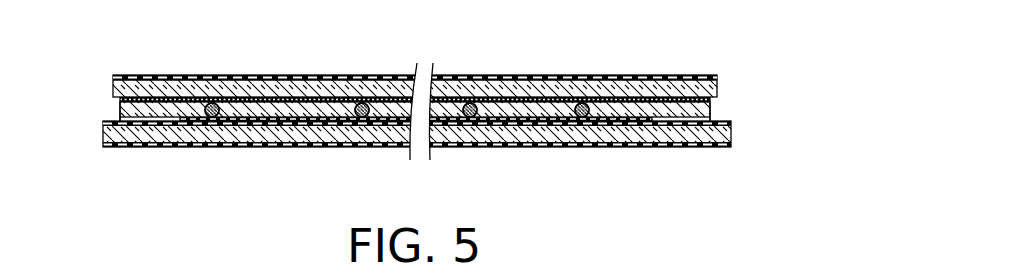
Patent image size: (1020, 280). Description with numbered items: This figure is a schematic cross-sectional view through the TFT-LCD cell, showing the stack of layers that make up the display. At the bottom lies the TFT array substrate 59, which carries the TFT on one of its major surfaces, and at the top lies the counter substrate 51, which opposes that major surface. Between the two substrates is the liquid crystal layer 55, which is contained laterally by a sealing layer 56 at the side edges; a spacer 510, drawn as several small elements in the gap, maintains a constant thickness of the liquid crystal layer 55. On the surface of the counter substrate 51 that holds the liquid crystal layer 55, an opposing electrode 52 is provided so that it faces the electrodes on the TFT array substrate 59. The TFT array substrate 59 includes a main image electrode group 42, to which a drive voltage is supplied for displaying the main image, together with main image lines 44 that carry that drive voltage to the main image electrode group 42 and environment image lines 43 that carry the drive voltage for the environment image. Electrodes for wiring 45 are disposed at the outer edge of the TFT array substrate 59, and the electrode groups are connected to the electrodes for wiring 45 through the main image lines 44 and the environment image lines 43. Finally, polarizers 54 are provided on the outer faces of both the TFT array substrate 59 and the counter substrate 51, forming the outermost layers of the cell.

The main image electrode group 42 is at (305, 135).
The environment image lines 43 is at (147, 123).
The main image lines 44 is at (213, 122).
The electrodes for wiring 45 is at (715, 122).
The counter substrate 51 is at (135, 92).
The opposing electrode 52 is at (225, 97).
The polarizers 54 is at (497, 142).
The liquid crystal layer 55 is at (612, 110).
The sealing layer 56 is at (120, 110).
The TFT array substrate 59 is at (348, 132).
The spacer 510 is at (467, 117).